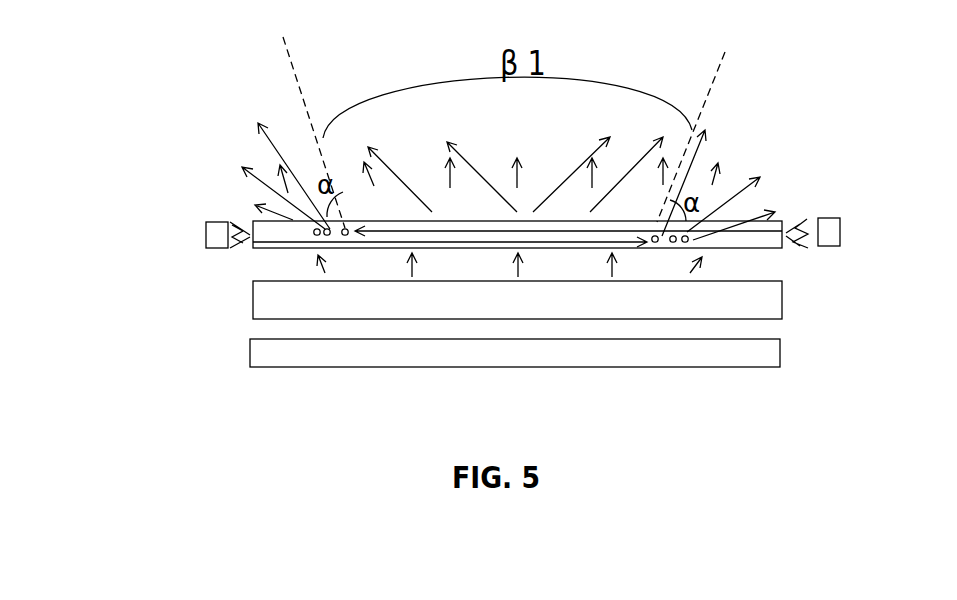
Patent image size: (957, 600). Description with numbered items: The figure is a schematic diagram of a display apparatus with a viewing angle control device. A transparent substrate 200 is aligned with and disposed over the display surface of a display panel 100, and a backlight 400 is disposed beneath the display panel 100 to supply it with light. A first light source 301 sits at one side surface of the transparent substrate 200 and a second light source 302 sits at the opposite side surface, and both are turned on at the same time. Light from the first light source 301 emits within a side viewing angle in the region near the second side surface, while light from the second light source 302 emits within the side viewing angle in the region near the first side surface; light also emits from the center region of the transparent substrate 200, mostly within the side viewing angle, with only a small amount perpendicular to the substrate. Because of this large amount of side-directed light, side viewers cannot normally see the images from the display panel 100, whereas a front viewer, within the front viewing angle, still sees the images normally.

The transparent substrate 200 is at (783, 220).
The first light source 301 is at (206, 233).
The second light source 302 is at (841, 232).
The display panel 100 is at (782, 295).
The backlight 400 is at (780, 348).